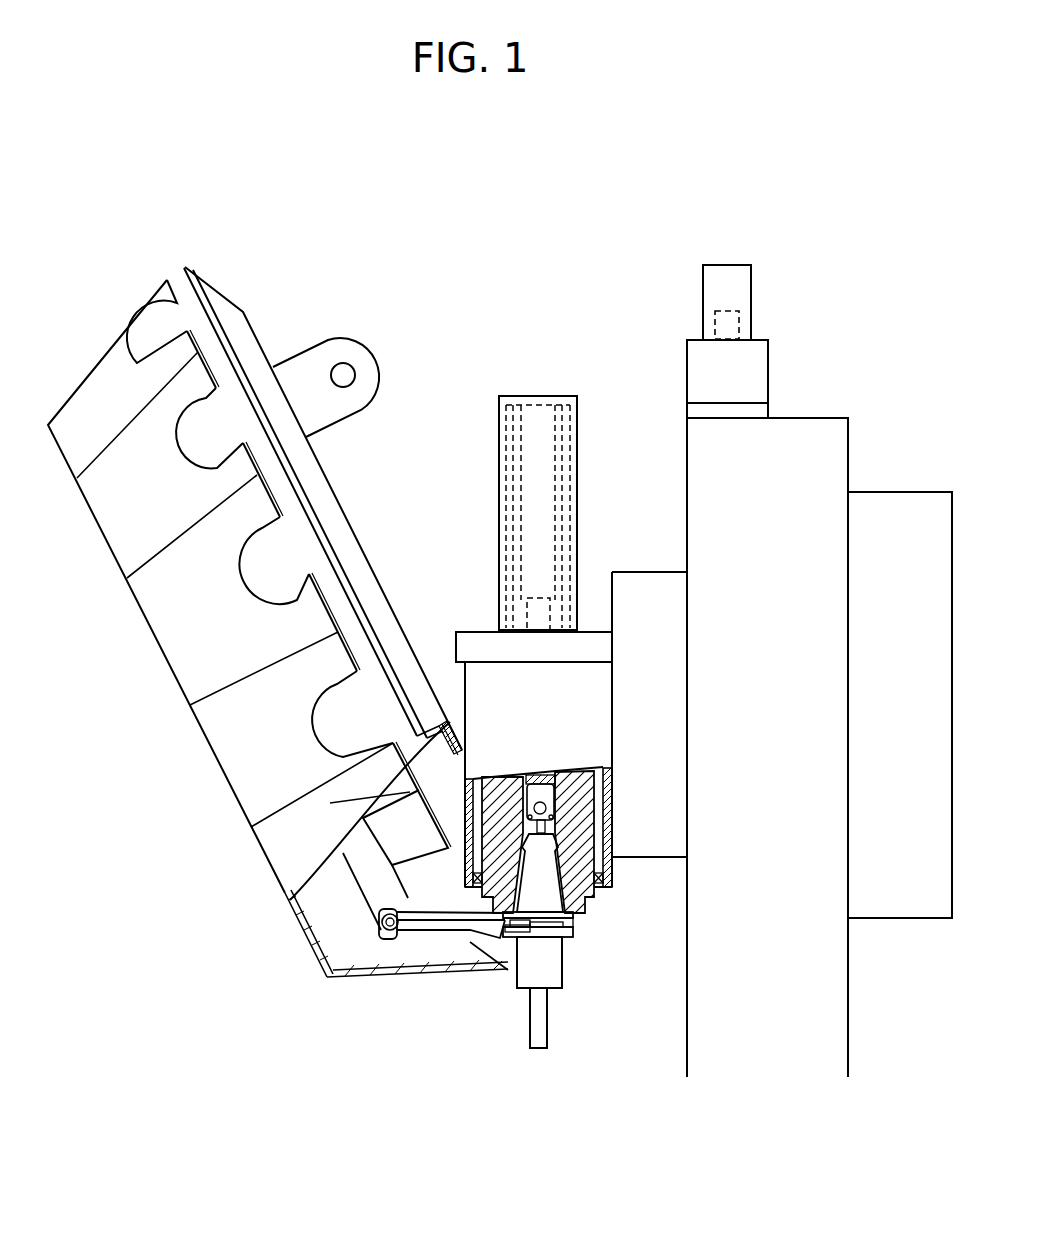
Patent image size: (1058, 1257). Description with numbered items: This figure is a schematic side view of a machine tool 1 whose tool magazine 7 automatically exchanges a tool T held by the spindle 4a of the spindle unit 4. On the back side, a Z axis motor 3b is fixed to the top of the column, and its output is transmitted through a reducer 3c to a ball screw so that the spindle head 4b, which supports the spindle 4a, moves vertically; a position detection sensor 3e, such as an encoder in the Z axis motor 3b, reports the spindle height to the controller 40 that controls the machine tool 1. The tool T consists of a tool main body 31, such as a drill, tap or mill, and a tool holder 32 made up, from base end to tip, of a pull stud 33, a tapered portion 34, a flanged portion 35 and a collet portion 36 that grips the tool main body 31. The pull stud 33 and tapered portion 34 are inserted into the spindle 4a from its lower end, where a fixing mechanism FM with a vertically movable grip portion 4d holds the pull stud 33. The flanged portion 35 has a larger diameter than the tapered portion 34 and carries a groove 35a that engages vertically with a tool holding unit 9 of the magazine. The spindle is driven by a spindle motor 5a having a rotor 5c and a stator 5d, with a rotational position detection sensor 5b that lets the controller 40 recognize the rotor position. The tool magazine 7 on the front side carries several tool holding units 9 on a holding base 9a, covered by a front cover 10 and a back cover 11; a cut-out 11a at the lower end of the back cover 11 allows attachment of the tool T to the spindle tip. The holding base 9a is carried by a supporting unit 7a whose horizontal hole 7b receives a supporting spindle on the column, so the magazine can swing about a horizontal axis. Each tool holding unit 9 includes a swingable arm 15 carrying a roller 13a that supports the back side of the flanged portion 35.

The machine tool 1 is at (738, 246).
The Z axis motor 3b is at (751, 289).
The reducer 3c is at (768, 370).
The position detection sensor 3e is at (739, 322).
The controller 40 is at (912, 492).
The spindle unit 4 is at (460, 618).
The spindle 4a is at (578, 918).
The spindle head 4b is at (606, 870).
The grip portion 4d is at (542, 775).
The fixing mechanism FM is at (512, 792).
The pull stud 33 is at (550, 808).
The tapered portion 34 is at (545, 862).
The flanged portion 35 is at (574, 938).
The groove 35a is at (572, 931).
The tool T is at (565, 962).
The collet portion 36 is at (562, 988).
The tool holder 32 is at (512, 986).
The tool main body 31 is at (547, 1050).
The spindle motor 5a is at (527, 396).
The rotational position detection sensor 5b is at (536, 598).
The rotor 5c is at (545, 402).
The stator 5d is at (506, 405).
The front cover 10 is at (152, 640).
The back cover 11 is at (340, 500).
The cut-out 11a is at (462, 745).
The tool magazine 7 is at (221, 282).
The supporting unit 7a is at (314, 341).
The hole 7b is at (355, 375).
The tool holding unit 9 is at (410, 940).
The holding base 9a is at (368, 887).
The arm 15 is at (442, 926).
The roller 13a is at (522, 940).